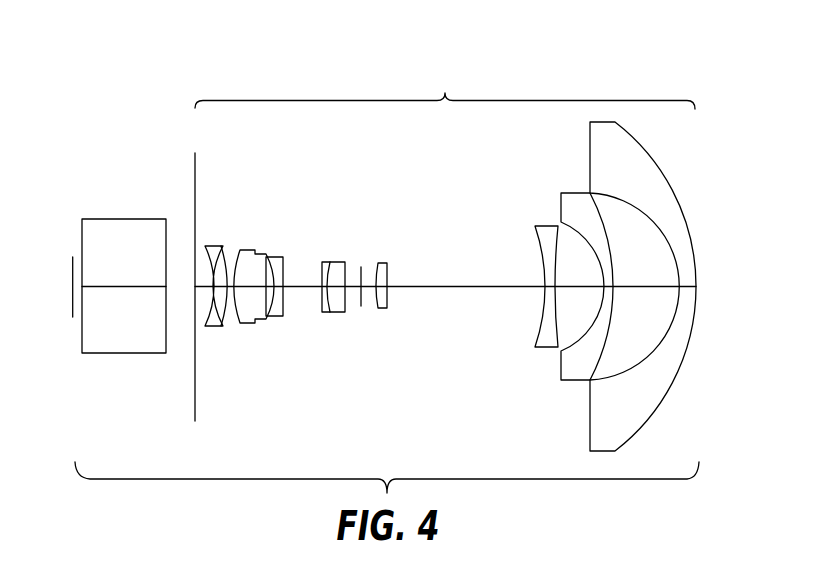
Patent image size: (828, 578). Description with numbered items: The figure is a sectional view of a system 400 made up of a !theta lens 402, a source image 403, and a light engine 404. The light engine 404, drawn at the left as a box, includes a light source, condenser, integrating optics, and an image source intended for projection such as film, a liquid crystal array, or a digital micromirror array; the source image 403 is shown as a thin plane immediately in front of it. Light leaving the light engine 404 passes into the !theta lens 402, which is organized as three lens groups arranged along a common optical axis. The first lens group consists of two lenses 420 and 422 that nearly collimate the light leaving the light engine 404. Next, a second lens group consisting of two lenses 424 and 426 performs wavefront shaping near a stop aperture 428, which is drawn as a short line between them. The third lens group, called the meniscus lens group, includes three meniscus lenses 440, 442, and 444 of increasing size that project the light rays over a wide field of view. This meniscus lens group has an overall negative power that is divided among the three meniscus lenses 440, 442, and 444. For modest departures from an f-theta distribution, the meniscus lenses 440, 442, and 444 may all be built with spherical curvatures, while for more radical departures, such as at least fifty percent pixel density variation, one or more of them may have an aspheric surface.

The system 400 is at (101, 44).
The !theta lens 402 is at (447, 92).
The source image 403 is at (72, 287).
The light engine 404 is at (125, 219).
The lens 420 is at (210, 245).
The lens 422 is at (277, 316).
The lens 424 is at (332, 261).
The lens 426 is at (381, 262).
The stop aperture 428 is at (362, 303).
The meniscus lens 440 is at (538, 322).
The meniscus lens 442 is at (561, 206).
The meniscus lens 444 is at (590, 157).